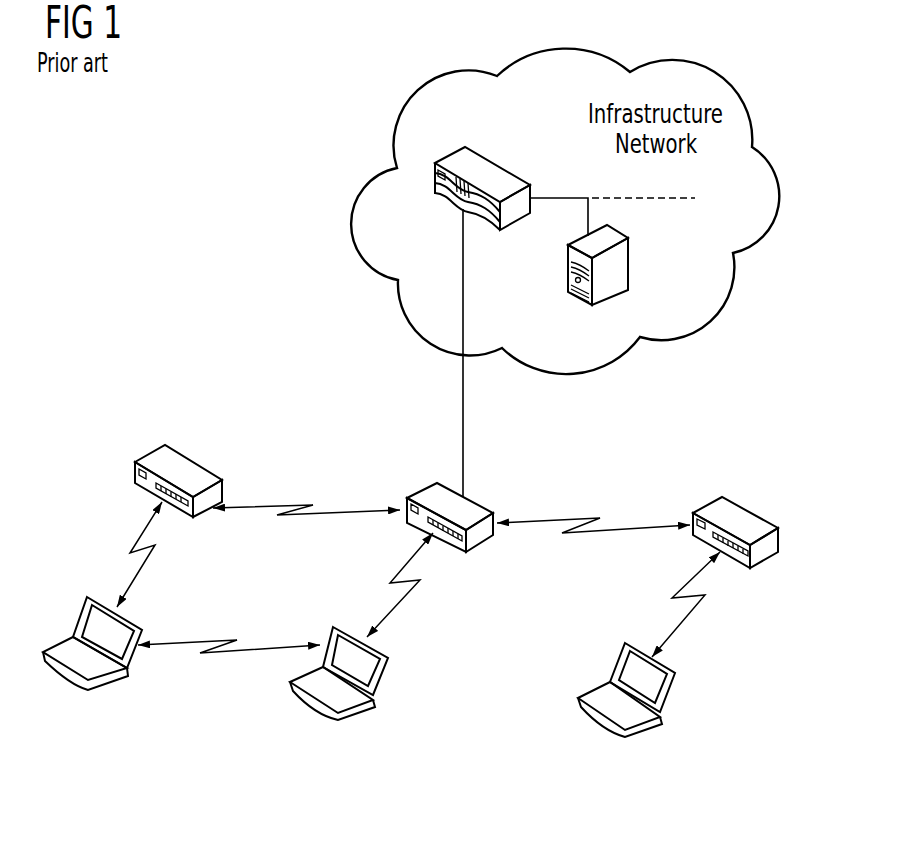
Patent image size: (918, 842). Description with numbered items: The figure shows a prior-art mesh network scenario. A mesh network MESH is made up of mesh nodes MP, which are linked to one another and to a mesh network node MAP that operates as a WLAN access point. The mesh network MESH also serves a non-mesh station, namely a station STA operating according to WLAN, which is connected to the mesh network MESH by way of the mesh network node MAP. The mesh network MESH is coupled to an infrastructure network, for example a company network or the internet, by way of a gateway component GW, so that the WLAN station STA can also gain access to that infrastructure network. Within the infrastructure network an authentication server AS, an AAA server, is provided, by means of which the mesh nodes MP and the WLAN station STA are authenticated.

The mesh network MESH is at (214, 228).
The gateway component GW is at (495, 162).
The authentication server AS is at (595, 263).
The mesh node MP is at (192, 462).
The mesh network node operating as WLAN access point MAP is at (763, 558).
The station STA is at (645, 725).